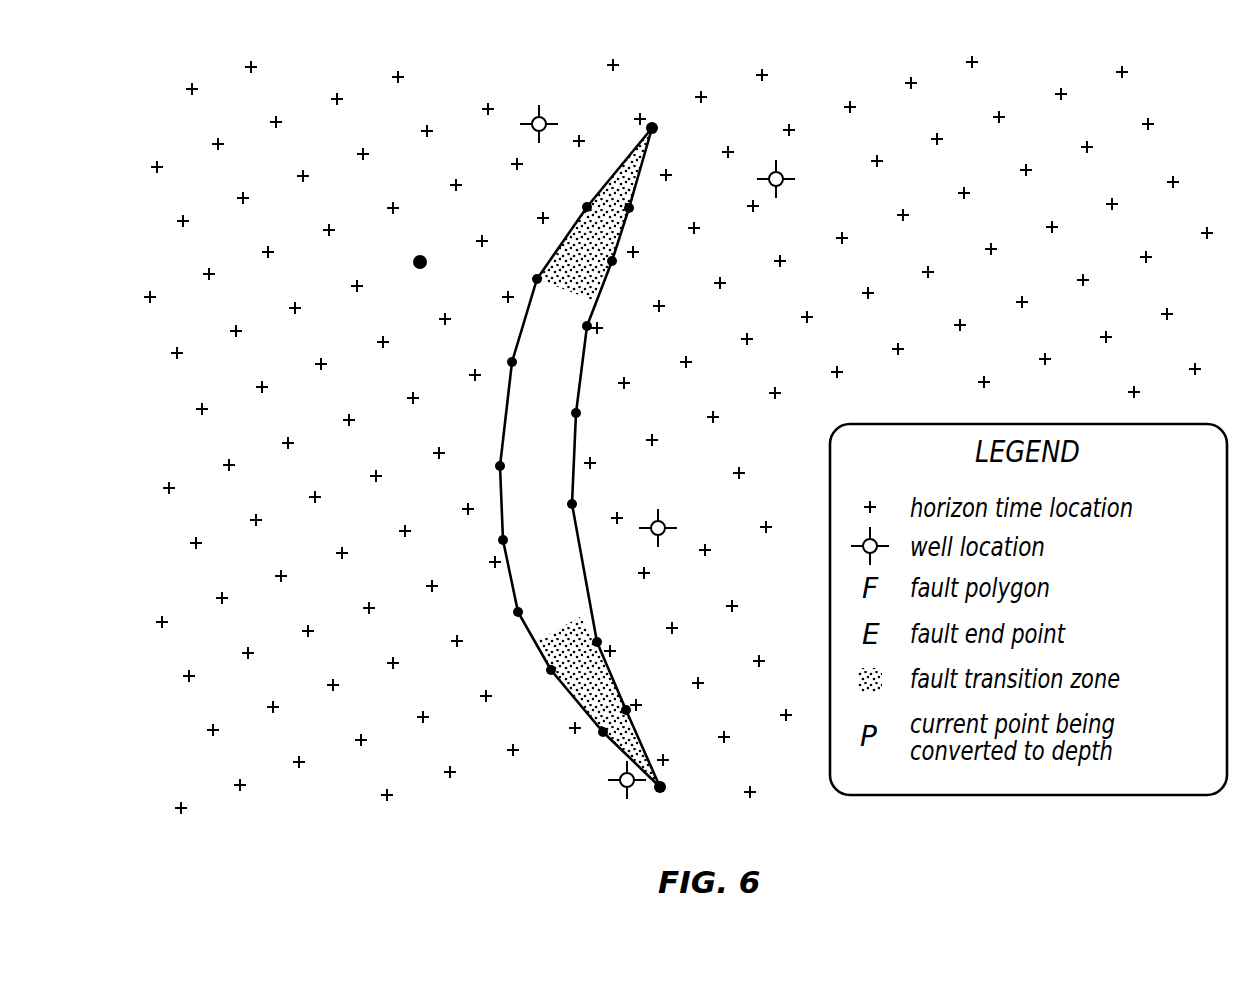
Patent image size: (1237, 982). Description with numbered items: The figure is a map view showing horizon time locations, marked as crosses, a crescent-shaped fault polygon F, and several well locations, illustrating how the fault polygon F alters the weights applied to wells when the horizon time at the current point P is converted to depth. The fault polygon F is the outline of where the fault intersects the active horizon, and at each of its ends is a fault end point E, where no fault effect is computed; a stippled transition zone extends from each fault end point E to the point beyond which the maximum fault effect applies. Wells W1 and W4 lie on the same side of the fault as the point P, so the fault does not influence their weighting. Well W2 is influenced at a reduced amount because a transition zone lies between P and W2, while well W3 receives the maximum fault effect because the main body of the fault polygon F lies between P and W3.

The fault polygon F is at (577, 457).
The fault end point E is at (666, 464).
The current point being converted to depth P is at (411, 279).
The well location W1 is at (561, 114).
The well location W2 is at (802, 179).
The well location W3 is at (672, 517).
The well location W4 is at (603, 780).